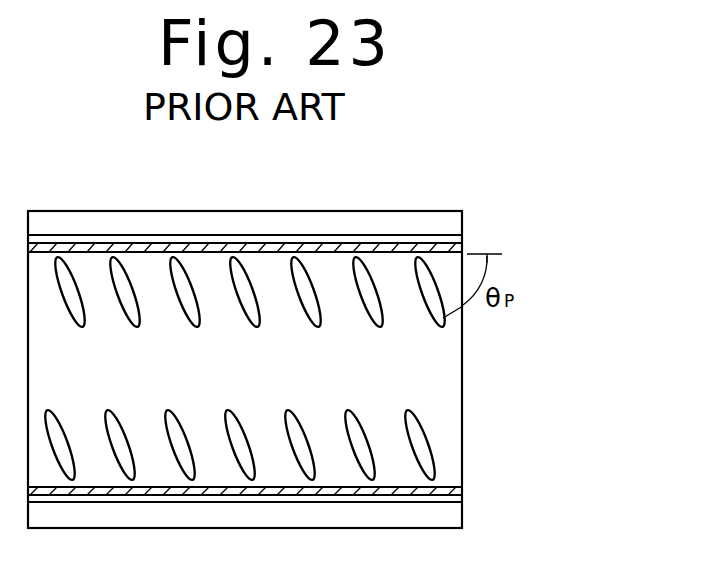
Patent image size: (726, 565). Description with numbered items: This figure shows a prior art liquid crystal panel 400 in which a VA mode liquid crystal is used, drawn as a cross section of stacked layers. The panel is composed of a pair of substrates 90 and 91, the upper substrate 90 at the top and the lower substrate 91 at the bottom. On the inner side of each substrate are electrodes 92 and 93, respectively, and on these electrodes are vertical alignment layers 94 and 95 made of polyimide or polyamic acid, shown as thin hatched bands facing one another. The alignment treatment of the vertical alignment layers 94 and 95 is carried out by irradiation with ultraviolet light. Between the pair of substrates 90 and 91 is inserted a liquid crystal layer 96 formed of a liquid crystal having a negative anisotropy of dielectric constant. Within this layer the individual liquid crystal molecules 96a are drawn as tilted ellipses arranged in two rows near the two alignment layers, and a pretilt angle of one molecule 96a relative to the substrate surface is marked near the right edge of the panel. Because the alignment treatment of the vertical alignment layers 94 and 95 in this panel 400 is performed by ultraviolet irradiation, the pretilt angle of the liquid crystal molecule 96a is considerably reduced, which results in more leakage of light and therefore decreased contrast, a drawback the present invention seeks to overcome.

The liquid crystal panel 400 is at (378, 200).
The substrate 90 is at (445, 216).
The electrode 92 is at (462, 237).
The vertical alignment layer 94 is at (462, 247).
The liquid crystal layer 96 is at (447, 392).
The liquid crystal molecule 96a is at (447, 330).
The vertical alignment layer 95 is at (462, 487).
The electrode 93 is at (462, 500).
The substrate 91 is at (455, 518).